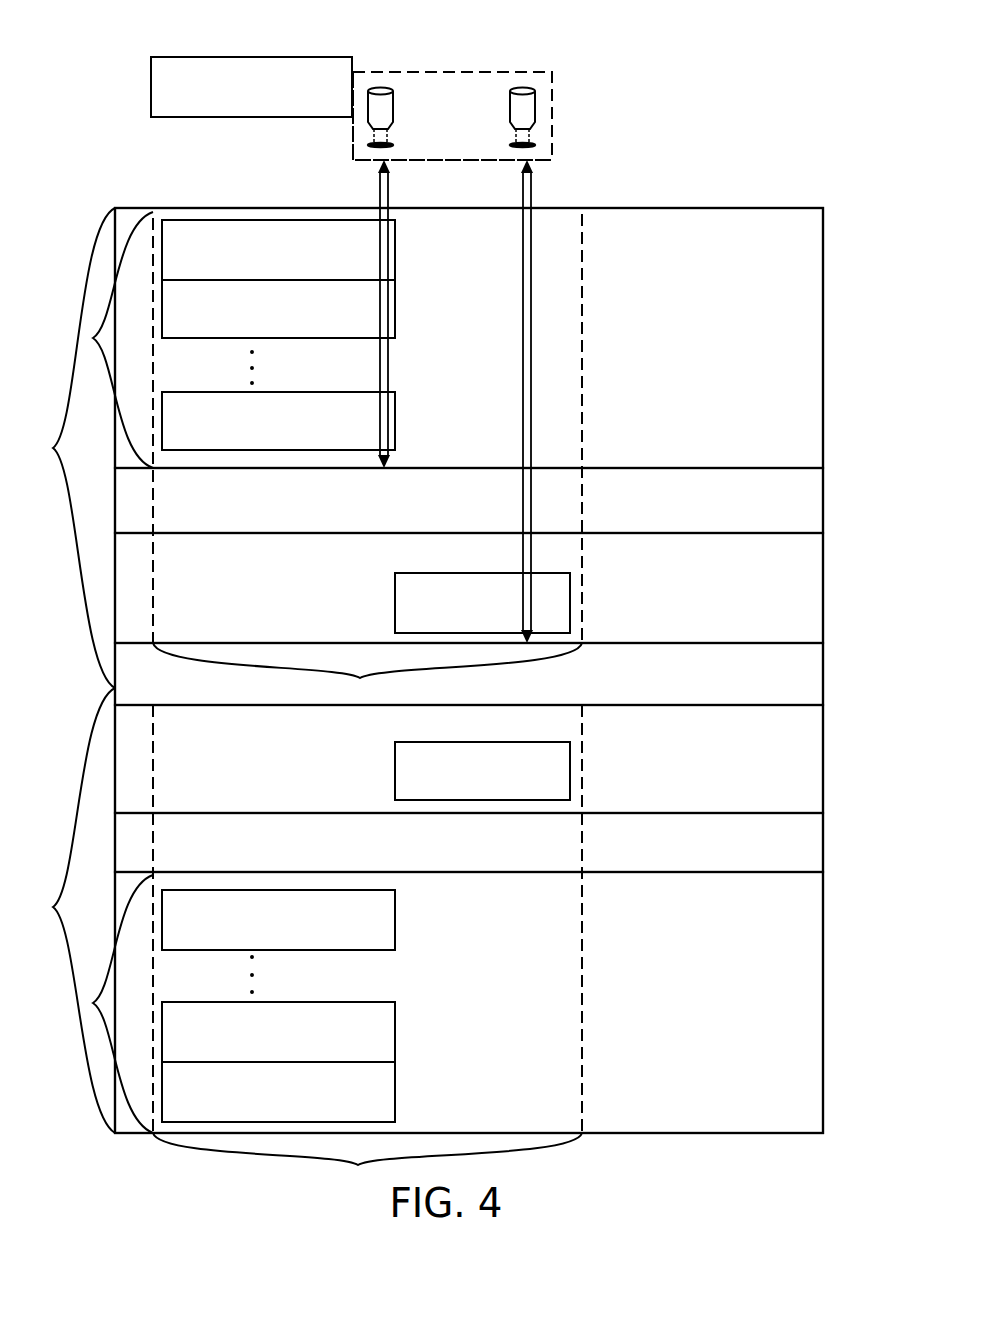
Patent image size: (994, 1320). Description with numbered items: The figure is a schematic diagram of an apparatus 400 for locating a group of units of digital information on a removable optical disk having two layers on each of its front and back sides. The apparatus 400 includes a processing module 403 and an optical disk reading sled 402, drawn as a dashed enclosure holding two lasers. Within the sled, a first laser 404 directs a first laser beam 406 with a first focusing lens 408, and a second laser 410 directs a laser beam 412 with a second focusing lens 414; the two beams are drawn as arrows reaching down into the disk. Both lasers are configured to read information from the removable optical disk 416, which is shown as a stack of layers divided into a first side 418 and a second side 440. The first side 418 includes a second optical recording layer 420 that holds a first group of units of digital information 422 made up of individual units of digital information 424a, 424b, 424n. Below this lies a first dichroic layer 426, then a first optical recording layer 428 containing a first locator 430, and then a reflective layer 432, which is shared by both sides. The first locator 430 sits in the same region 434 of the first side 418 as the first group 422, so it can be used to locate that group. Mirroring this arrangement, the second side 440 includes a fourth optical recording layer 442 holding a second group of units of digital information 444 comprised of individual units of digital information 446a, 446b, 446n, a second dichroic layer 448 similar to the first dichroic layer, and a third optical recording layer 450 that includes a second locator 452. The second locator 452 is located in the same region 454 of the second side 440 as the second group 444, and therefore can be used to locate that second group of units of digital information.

The apparatus 400 is at (78, 72).
The processing module 403 is at (234, 110).
The optical disk reading sled 402 is at (553, 121).
The first laser 404 is at (532, 101).
The first laser beam 406 is at (531, 201).
The first focusing lens 408 is at (553, 150).
The second laser 410 is at (390, 88).
The laser beam 412 is at (378, 197).
The second focusing lens 414 is at (353, 158).
The removable optical disk 416 is at (740, 208).
The first side 418 is at (66, 448).
The second optical recording layer 420 is at (718, 265).
The first group of units of digital information 422 is at (95, 340).
The unit of digital information 424a is at (257, 273).
The unit of digital information 424b is at (257, 333).
The unit of digital information 424n is at (257, 445).
The first dichroic layer 426 is at (706, 523).
The first optical recording layer 428 is at (706, 590).
The first locator 430 is at (465, 628).
The reflective layer 432 is at (705, 698).
The region 434 is at (367, 673).
The second side 440 is at (66, 910).
The fourth optical recording layer 442 is at (718, 928).
The second group of units of digital information 444 is at (98, 1004).
The unit of digital information 446a is at (257, 1116).
The unit of digital information 446b is at (257, 1055).
The unit of digital information 446n is at (257, 945).
The second dichroic layer 448 is at (706, 870).
The third optical recording layer 450 is at (706, 761).
The second locator 452 is at (465, 795).
The region 454 is at (367, 1163).